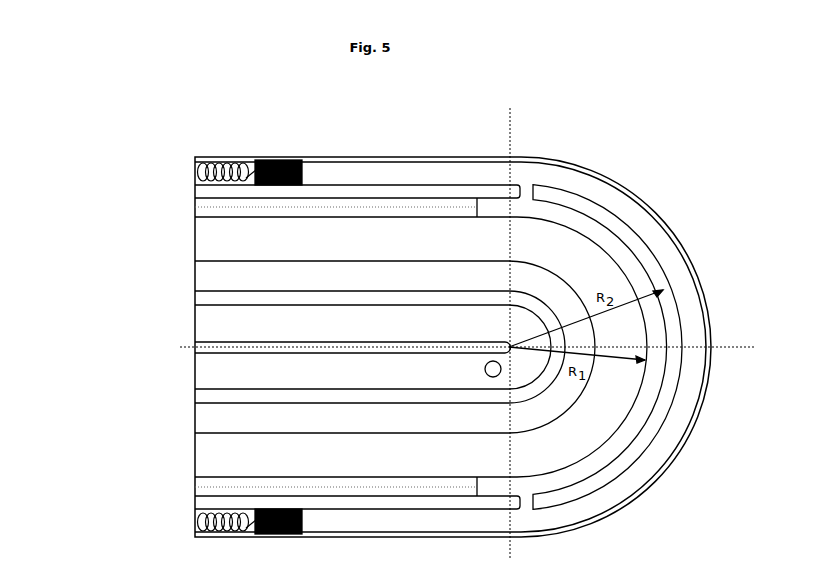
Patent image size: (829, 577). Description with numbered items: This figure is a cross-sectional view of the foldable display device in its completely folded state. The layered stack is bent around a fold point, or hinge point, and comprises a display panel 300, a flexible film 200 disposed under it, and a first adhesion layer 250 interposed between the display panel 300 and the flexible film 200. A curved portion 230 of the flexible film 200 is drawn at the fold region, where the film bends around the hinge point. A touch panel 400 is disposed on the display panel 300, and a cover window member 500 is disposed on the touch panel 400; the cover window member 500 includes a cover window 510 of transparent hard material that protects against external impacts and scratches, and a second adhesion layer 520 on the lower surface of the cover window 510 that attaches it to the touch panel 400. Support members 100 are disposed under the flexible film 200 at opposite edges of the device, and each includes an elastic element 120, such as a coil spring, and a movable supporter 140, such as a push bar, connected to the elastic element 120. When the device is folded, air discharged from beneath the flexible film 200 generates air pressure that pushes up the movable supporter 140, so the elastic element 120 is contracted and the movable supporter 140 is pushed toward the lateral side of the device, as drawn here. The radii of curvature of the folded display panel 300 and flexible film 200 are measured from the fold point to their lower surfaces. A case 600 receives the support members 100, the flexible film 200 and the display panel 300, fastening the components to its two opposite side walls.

The support member 100 is at (250, 303).
The elastic element 120 is at (222, 157).
The movable supporter 140 is at (280, 159).
The flexible film 200 is at (349, 192).
The curved layer portion 230 is at (538, 182).
The first adhesion layer 250 is at (400, 205).
The display panel 300 is at (195, 241).
The touch panel 400 is at (195, 280).
The cover window member 500 is at (329, 340).
The cover window 510 is at (194, 328).
The second adhesion layer 520 is at (195, 299).
The case 600 is at (638, 192).